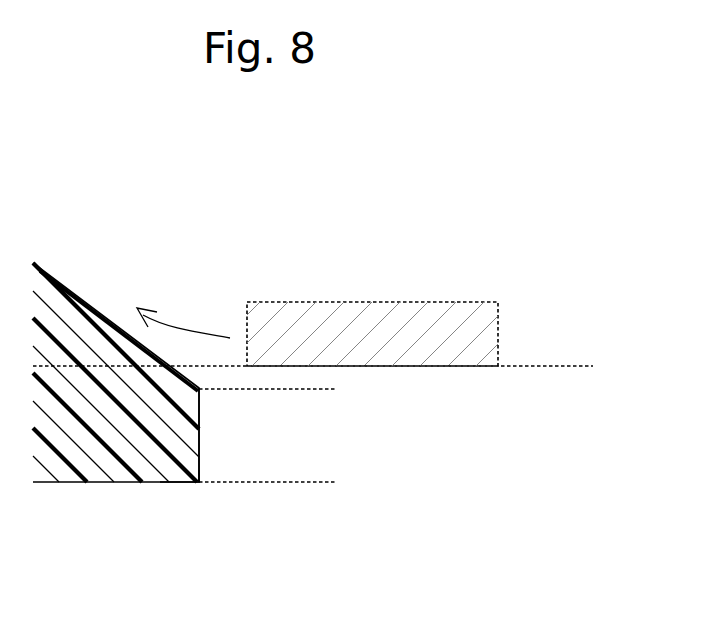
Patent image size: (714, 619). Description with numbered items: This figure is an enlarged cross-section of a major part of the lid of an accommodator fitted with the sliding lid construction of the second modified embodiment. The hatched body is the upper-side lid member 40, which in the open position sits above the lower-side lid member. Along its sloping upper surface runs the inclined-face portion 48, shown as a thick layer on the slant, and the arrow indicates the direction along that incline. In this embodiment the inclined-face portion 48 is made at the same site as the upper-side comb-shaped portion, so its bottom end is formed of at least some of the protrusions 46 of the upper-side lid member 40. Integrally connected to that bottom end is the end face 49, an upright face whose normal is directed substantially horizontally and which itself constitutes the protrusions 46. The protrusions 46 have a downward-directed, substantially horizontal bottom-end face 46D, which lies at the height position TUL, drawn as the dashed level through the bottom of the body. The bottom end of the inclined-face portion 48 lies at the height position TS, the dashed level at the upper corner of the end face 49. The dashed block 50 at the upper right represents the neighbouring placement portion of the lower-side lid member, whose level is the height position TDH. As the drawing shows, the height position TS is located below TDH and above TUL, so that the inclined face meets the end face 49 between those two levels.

The upper-side lid member 40 is at (116, 431).
The protrusions 46 is at (83, 483).
The bottom-end face 46D is at (172, 483).
The inclined-face portion 48 is at (83, 300).
The end face 49 is at (199, 433).
The die head 50 is at (430, 315).
The height position TDH is at (346, 366).
The height position TS is at (289, 391).
The height position TUL is at (298, 483).